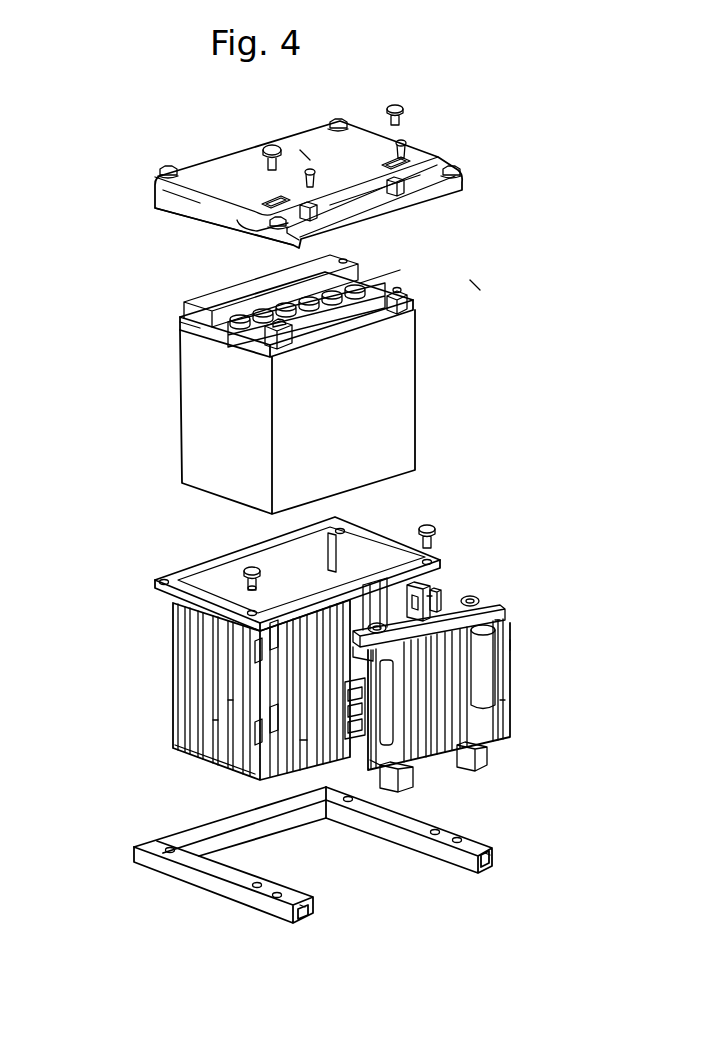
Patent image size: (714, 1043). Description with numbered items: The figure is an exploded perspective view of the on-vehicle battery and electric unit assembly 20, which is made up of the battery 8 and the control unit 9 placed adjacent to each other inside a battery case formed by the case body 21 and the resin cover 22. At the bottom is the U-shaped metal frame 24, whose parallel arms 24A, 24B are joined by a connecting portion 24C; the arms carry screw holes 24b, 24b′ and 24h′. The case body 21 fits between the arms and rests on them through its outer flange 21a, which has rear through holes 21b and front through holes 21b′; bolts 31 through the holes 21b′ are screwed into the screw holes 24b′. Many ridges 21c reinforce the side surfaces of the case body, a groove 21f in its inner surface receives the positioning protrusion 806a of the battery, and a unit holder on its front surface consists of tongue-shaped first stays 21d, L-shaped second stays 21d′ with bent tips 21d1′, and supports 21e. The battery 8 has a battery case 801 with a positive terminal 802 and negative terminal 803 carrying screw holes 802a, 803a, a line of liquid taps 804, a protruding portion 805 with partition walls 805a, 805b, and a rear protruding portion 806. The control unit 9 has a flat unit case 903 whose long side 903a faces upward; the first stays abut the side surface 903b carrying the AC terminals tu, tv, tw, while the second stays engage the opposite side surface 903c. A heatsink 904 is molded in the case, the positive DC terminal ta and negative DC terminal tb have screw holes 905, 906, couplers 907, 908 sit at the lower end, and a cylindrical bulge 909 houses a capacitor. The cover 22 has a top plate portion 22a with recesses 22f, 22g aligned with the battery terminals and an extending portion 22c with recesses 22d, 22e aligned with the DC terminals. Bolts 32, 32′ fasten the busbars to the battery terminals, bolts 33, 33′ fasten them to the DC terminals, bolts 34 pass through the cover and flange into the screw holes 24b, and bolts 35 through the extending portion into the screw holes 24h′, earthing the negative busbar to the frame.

The battery and electric unit assembly 20 is at (488, 277).
The cover 22 is at (324, 163).
The top plate portion 22a is at (313, 152).
The extending portion 22c is at (410, 205).
The recess 22d is at (405, 162).
The recess 22e is at (308, 206).
The recess 22f is at (396, 178).
The recess 22g is at (230, 207).
The bolt 32 is at (400, 106).
The bolt 32′ is at (270, 148).
The bolt 33 is at (404, 141).
The bolt 33′ is at (303, 178).
The bolt 34 is at (168, 172).
The bolt 35 is at (260, 229).
The battery 8 is at (301, 363).
The battery case 801 is at (405, 435).
The positive terminal 802 is at (443, 277).
The screw hole 802a is at (400, 288).
The negative terminal 803 is at (201, 359).
The screw hole 803a is at (268, 330).
The liquid tap 804 is at (360, 288).
The protruding portion 805 is at (415, 307).
The partition wall 805a is at (400, 270).
The partition wall 805b is at (200, 328).
The protruding portion 806 is at (244, 288).
The positioning protrusion 806a is at (335, 263).
The case body 21 is at (295, 648).
The outer flange 21a is at (158, 588).
The through hole 21b is at (160, 582).
The through hole 21b′ is at (250, 610).
The ridge 21c is at (172, 694).
The first stay 21d is at (270, 640).
The second stay 21d′ is at (425, 592).
The tip 21d1′ is at (440, 600).
The support 21e is at (250, 770).
The groove 21f is at (250, 588).
The bolt 31 is at (252, 567).
The three-phase AC terminal tu is at (230, 715).
The three-phase AC terminal tv is at (215, 740).
The three-phase AC terminal tw is at (303, 755).
The negative DC terminal tb is at (430, 600).
The positive DC terminal ta is at (495, 612).
The control unit 9 is at (484, 650).
The unit case 903 is at (488, 702).
The long side 903a is at (500, 608).
The side surface 903b is at (370, 760).
The side surface 903c is at (512, 632).
The heatsink 904 is at (505, 717).
The screw hole 905 is at (472, 597).
The screw hole 906 is at (380, 623).
The coupler 907 is at (488, 758).
The coupler 908 is at (410, 790).
The bulge 909 is at (490, 660).
The frame 24 is at (328, 857).
The arm 24A is at (195, 875).
The arm 24B is at (455, 862).
The connecting portion 24C is at (290, 828).
The screw hole 24b is at (165, 853).
The screw hole 24b′ is at (255, 888).
The screw hole 24h′ is at (282, 895).